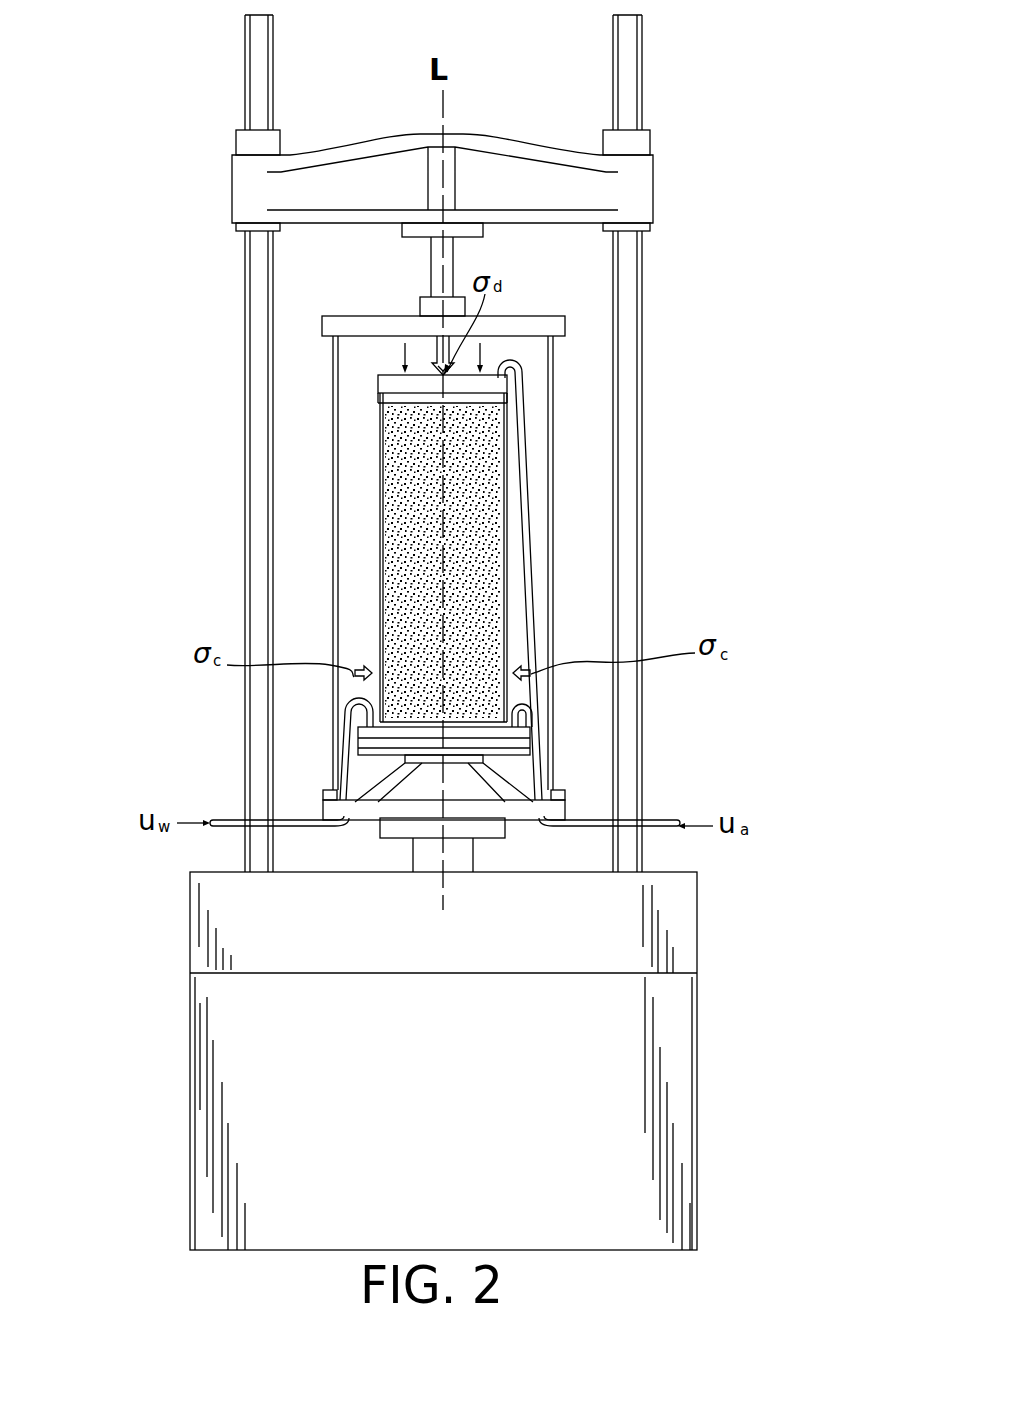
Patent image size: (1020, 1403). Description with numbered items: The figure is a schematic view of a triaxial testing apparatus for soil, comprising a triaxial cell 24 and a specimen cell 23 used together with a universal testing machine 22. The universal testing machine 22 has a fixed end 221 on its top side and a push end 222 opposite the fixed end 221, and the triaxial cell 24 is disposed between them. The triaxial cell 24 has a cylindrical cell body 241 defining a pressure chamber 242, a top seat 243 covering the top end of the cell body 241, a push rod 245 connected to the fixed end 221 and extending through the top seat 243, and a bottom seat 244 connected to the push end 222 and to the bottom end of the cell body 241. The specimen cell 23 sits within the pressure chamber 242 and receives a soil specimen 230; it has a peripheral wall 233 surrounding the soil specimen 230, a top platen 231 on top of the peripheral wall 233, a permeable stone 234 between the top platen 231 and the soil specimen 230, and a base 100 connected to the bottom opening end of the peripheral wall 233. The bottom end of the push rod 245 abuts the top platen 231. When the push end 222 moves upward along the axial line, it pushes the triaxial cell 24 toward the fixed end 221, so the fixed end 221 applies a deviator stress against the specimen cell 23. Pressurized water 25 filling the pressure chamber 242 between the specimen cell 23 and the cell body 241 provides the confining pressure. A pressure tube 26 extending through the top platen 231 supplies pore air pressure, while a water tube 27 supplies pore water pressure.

The universal testing machine 22 is at (677, 998).
The fixed end 221 is at (640, 193).
The push end 222 is at (387, 828).
The specimen cell 23 is at (370, 562).
The soil specimen 230 is at (506, 595).
The top platen 231 is at (397, 383).
The peripheral wall 233 is at (380, 607).
The permeable stone 234 is at (377, 402).
The triaxial cell 24 is at (552, 450).
The cell body 241 is at (556, 568).
The pressure chamber 242 is at (353, 480).
The pressurized water 25 is at (521, 673).
The top seat 243 is at (330, 328).
The bottom seat 244 is at (330, 810).
The push rod 245 is at (433, 275).
The pressure tube 26 is at (520, 403).
The water tube 27 is at (347, 765).
The base 100 is at (522, 762).